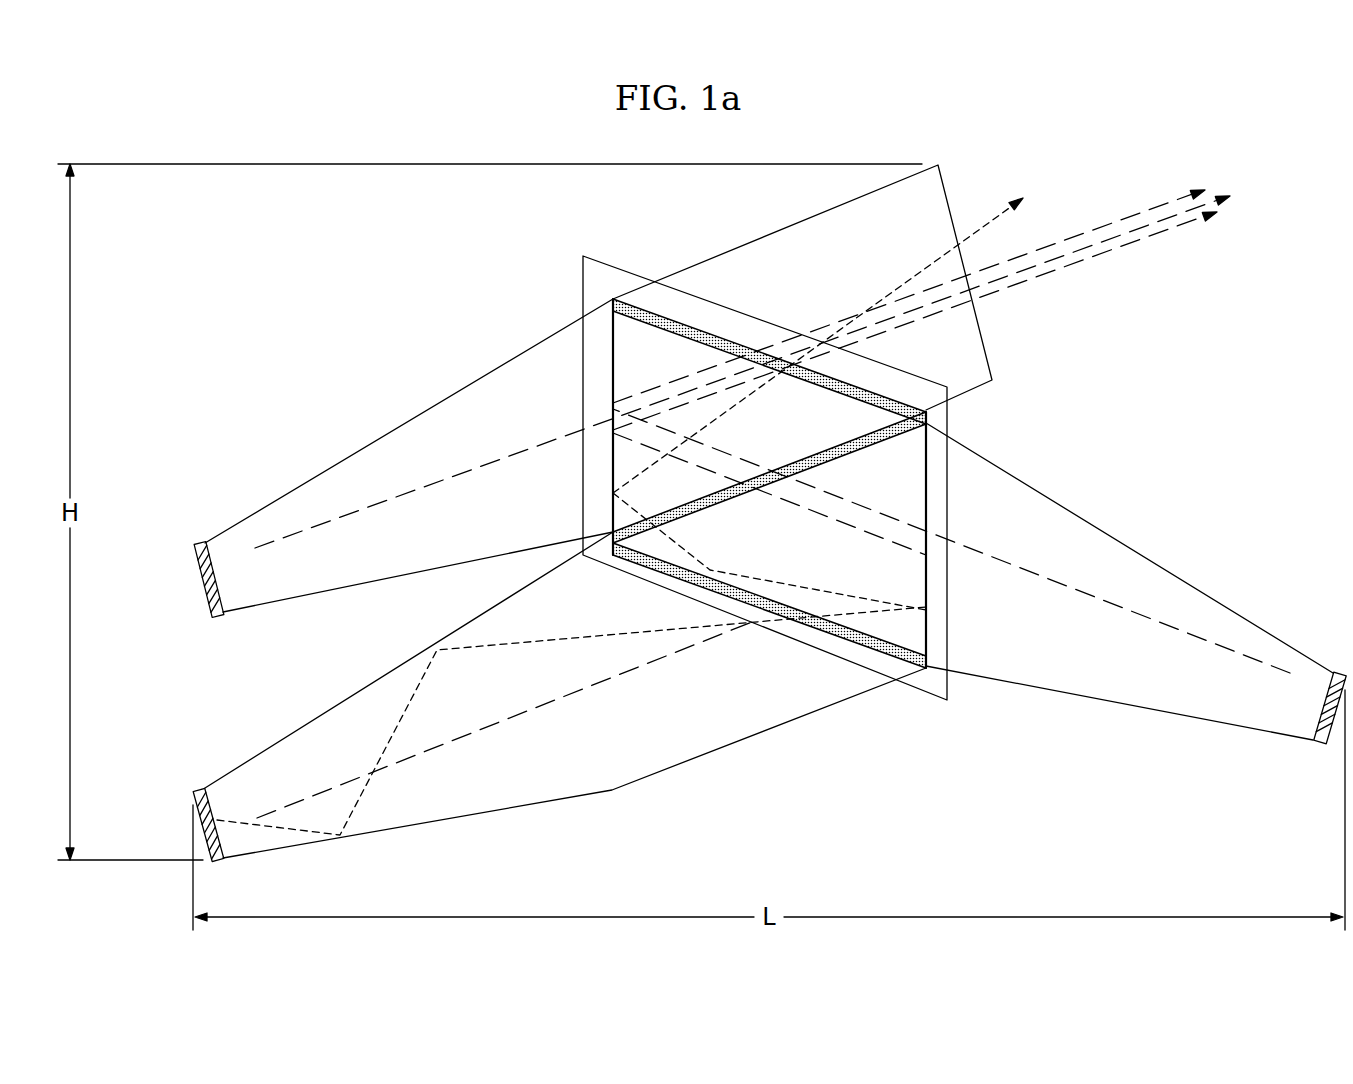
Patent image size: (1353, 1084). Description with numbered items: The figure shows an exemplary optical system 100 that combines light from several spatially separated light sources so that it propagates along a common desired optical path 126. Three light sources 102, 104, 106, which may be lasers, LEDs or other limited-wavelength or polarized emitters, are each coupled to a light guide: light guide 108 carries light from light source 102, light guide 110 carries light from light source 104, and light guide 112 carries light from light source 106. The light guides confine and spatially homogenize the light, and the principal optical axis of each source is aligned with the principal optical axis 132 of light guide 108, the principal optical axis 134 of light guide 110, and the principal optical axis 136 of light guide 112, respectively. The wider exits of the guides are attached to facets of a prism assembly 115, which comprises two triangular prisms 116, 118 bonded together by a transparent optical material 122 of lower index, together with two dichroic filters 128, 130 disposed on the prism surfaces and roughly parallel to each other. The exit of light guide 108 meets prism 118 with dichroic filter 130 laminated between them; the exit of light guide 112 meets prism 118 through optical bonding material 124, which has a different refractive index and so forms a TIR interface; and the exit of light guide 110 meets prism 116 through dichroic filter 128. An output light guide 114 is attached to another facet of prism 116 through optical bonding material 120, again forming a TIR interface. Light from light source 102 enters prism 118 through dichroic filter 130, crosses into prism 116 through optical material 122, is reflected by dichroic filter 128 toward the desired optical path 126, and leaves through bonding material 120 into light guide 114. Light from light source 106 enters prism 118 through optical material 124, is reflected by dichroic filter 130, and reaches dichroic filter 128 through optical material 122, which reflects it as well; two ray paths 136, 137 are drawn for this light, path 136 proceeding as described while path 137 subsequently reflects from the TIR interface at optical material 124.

The optical system 100 is at (1103, 135).
The light source 102 is at (1318, 744).
The light source 104 is at (198, 542).
The light source 106 is at (198, 789).
The light guide 108 is at (1113, 667).
The light guide 110 is at (452, 444).
The light guide 112 is at (544, 764).
The light guide 114 is at (818, 276).
The prism assembly 115 is at (575, 289).
The prism 116 is at (768, 432).
The prism 118 is at (756, 554).
The optical bonding material 120 is at (700, 323).
The optical material 122 is at (613, 522).
The optical bonding material 124 is at (835, 640).
The desired optical path 126 is at (1221, 233).
The dichroic filter 128 is at (605, 373).
The dichroic filter 130 is at (926, 490).
The principal optical axis 132 is at (1076, 584).
The principal optical axis 134 is at (370, 508).
The principal optical axis 136 is at (630, 672).
The optical ray path 137 is at (500, 652).